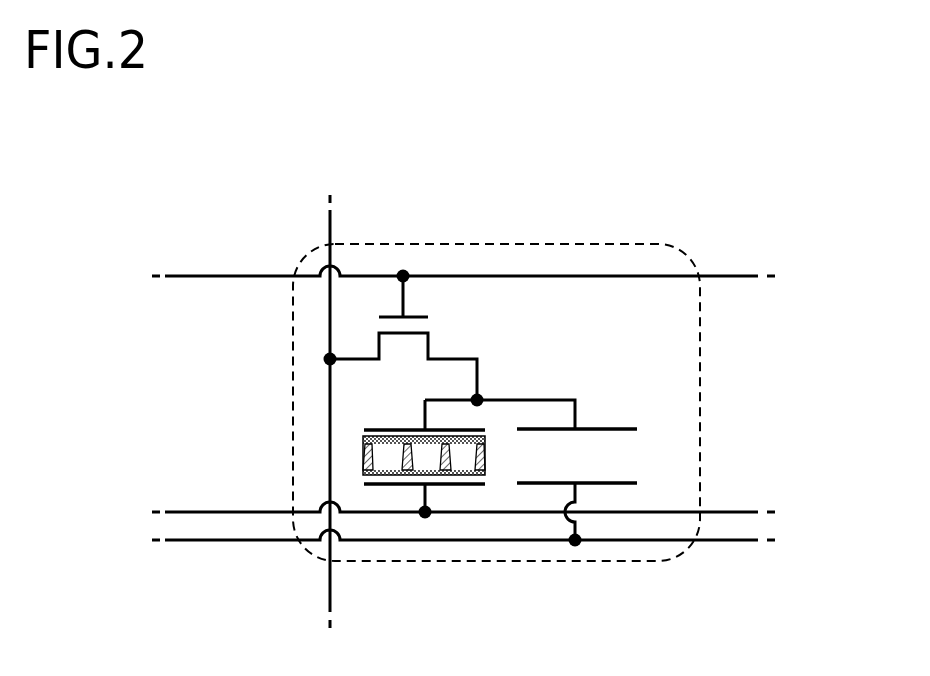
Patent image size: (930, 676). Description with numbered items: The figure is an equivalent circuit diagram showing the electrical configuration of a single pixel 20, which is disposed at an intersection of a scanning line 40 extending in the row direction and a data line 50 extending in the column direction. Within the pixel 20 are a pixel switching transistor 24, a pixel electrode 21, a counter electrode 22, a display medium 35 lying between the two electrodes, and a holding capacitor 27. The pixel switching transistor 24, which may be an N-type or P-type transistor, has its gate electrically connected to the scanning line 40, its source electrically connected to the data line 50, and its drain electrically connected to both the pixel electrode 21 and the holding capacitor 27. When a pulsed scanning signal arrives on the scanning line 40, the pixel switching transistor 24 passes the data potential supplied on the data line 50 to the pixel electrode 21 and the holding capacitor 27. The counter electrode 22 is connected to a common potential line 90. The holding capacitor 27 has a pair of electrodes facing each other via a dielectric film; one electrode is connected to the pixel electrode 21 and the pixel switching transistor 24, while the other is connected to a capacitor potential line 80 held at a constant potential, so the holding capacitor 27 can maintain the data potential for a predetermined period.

The pixel 20 is at (432, 244).
The pixel electrode 21 is at (473, 430).
The counter electrode 22 is at (457, 485).
The pixel switching transistor 24 is at (373, 326).
The holding capacitor 27 is at (628, 455).
The display medium 35 is at (363, 441).
The scanning line 40 is at (580, 276).
The data line 50 is at (330, 237).
The capacitor potential line 80 is at (718, 540).
The common potential line 90 is at (718, 512).